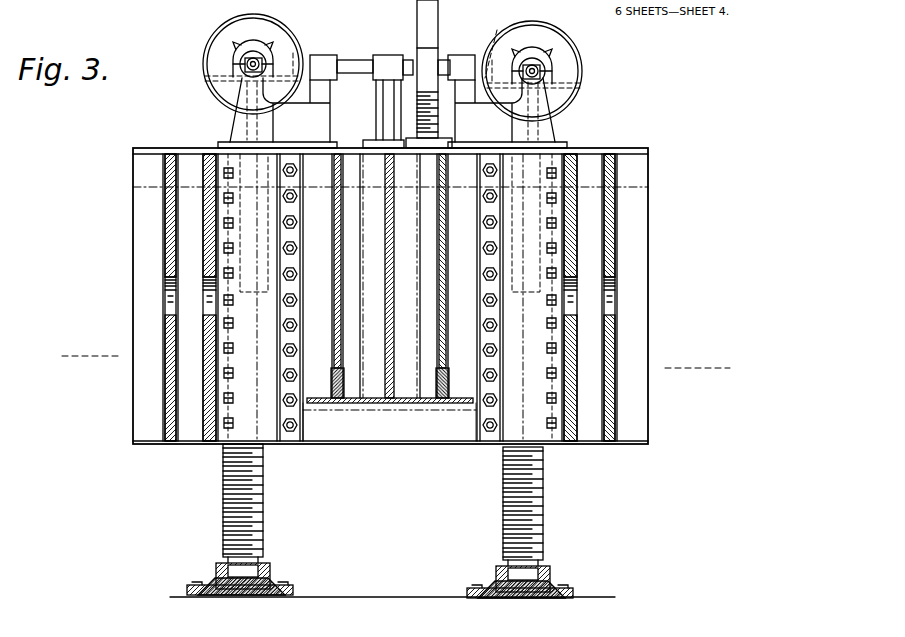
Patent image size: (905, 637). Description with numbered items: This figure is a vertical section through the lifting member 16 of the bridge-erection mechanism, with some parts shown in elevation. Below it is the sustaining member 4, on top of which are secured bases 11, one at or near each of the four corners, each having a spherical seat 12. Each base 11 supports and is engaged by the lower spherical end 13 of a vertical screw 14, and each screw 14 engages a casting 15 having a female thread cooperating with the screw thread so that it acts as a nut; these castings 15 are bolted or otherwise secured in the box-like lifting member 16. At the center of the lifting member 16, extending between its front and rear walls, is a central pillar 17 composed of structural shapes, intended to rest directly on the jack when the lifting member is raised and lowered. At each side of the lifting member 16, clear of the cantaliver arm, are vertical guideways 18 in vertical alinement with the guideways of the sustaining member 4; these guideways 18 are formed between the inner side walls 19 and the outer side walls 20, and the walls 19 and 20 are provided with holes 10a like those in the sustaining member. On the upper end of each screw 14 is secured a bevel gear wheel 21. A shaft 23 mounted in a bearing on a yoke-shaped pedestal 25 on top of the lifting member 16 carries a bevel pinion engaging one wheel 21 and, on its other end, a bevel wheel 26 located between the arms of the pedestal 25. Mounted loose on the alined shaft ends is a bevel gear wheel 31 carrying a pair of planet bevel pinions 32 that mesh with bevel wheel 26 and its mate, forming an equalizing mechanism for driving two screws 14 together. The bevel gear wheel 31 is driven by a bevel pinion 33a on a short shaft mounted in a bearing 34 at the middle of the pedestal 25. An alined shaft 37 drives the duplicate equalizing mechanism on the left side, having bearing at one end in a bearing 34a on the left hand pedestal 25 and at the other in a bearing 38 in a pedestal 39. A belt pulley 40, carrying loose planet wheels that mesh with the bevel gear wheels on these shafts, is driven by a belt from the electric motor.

The sustaining member 4 is at (392, 365).
The holes 10a is at (205, 298).
The bases 11 is at (228, 597).
The spherical seats 12 is at (245, 590).
The lower spherical end 13 is at (270, 576).
The vertical screw 14 is at (263, 500).
The casting 15 is at (267, 441).
The lifting member 16 is at (366, 441).
The central pillar 17 is at (400, 396).
The vertical guideways 18 is at (184, 441).
The inner side walls 19 is at (205, 233).
The outer side walls 20 is at (168, 200).
The bevel gear wheel 21 is at (214, 88).
The shaft 23 is at (560, 72).
The yoke-shaped pedestal 25 is at (392, 113).
The bevel wheel 26 is at (233, 62).
The bevel gear wheel 31 is at (218, 48).
The planet bevel pinions 32 is at (255, 40).
The bevel pinion 33a is at (489, 45).
The bearing 34 is at (462, 58).
The bearing 34a is at (330, 54).
The shaft 37 is at (357, 61).
The bearing 38 is at (384, 59).
The pedestal 39 is at (384, 106).
The belt pulley 40 is at (440, 13).